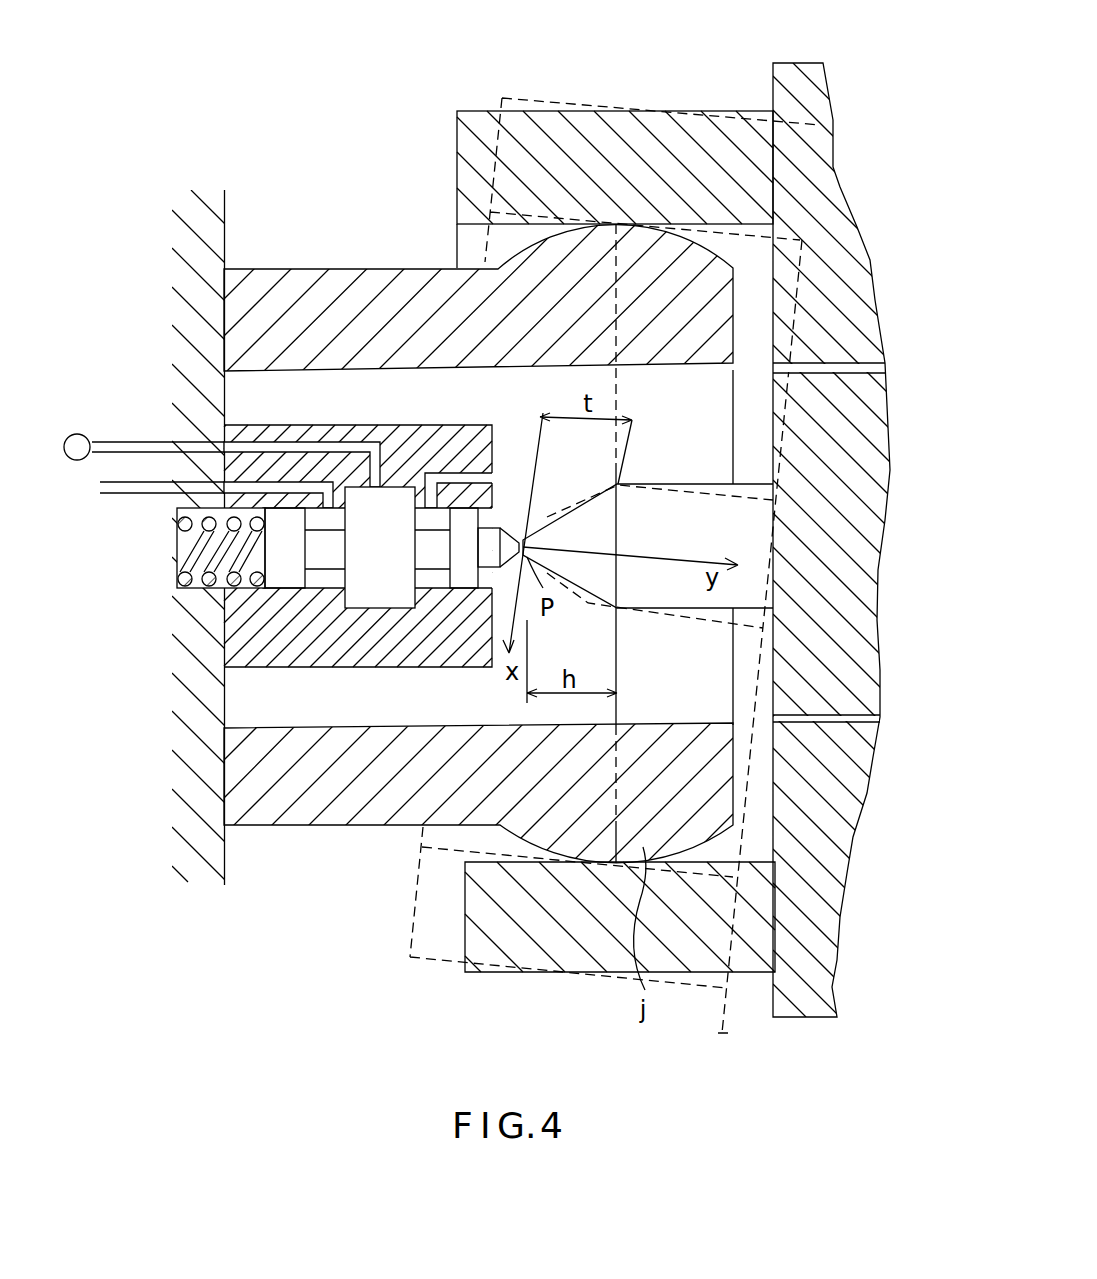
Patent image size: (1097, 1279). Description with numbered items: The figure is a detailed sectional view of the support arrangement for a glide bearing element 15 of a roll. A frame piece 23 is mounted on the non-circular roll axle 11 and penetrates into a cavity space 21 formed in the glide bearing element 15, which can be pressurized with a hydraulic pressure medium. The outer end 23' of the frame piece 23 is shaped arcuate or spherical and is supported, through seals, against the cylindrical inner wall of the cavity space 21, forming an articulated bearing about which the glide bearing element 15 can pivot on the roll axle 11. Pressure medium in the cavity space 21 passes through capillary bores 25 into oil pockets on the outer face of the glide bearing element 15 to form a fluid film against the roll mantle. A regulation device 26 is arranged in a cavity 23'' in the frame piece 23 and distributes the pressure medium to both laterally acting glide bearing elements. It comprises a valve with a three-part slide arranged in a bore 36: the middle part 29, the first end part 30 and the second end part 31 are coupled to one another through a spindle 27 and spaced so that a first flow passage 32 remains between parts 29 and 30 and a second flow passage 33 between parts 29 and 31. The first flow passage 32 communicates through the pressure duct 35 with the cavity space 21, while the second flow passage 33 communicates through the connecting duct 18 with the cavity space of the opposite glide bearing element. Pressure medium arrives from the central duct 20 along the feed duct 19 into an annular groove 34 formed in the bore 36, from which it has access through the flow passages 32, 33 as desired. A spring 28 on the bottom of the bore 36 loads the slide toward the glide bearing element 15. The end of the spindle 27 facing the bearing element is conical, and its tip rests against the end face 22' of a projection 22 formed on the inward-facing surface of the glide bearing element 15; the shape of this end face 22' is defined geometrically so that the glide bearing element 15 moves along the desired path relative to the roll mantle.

The roll axle 11 is at (200, 243).
The glide bearing element 15 is at (603, 133).
The connecting duct 18 is at (126, 494).
The feed duct 19 is at (137, 442).
The central duct 20 is at (78, 435).
The cavity space 21 is at (767, 827).
The projection 22 is at (729, 546).
The end face 22' is at (660, 524).
The frame piece 23 is at (478, 524).
The outer end 23' is at (592, 925).
The cavity 23'' is at (829, 547).
The capillary bore 25 is at (860, 363).
The regulation device 26 is at (155, 691).
The spindle 27 is at (523, 537).
The spring 28 is at (177, 590).
The middle part of the slide 29 is at (360, 582).
The first end part of the slide 30 is at (460, 515).
The second end part of the slide 31 is at (280, 582).
The first flow passage 32 is at (437, 582).
The second flow passage 33 is at (322, 582).
The annular groove 34 is at (398, 600).
The pressure duct 35 is at (433, 472).
The bore 36 is at (503, 537).